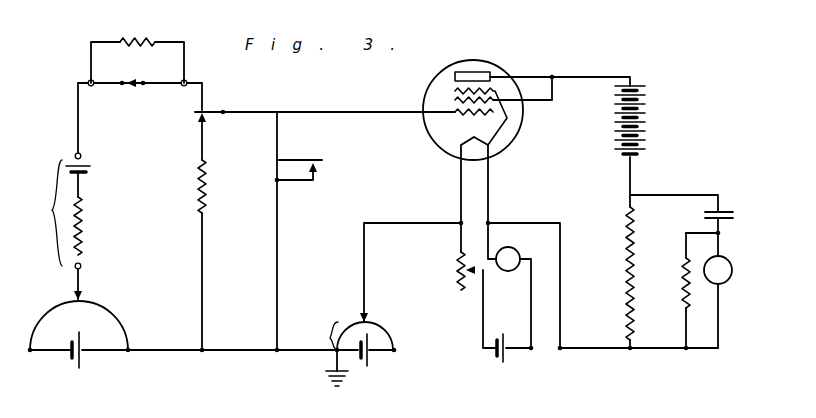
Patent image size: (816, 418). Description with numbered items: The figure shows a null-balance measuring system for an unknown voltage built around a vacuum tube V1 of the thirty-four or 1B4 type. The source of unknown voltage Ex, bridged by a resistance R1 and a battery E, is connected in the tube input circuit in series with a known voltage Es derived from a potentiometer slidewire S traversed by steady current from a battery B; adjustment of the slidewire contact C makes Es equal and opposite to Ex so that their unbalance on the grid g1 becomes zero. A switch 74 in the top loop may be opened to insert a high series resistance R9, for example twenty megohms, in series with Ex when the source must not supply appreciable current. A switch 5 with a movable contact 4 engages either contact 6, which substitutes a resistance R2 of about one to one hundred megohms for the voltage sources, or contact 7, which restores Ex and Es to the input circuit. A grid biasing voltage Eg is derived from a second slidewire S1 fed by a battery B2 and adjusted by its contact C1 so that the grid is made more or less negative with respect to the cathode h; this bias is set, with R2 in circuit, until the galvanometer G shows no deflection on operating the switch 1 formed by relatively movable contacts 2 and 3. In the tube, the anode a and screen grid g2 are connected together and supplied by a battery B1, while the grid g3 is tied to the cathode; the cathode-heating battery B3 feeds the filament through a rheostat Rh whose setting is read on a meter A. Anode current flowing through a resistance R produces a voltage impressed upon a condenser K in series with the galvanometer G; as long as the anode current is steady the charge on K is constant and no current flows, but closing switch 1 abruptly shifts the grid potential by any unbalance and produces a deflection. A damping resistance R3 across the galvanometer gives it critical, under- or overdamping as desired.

The series resistance R9 is at (126, 41).
The switch 74 is at (136, 87).
The contact 6 is at (198, 111).
The movable contact 4 is at (217, 108).
The switch 5 is at (227, 136).
The contact 7 is at (198, 128).
The contact 3 is at (302, 160).
The switch 1 is at (341, 176).
The contact 2 is at (305, 181).
The resistance R2 is at (208, 188).
The battery E / earth E is at (90, 166).
The unknown voltage Ex is at (35, 213).
The resistance R1 is at (86, 230).
The potentiometer slidewire S is at (50, 305).
The slidewire contact C is at (84, 298).
The known voltage Es is at (80, 302).
The battery B is at (80, 368).
The grid biasing voltage Eg is at (319, 326).
The contact C1 is at (370, 320).
The second slidewire potentiometer S1 is at (390, 334).
The battery B2 is at (370, 356).
The rheostat Rh is at (456, 270).
The meter A is at (508, 259).
The cathode-heating battery B3 is at (504, 362).
The tube V1 is at (518, 128).
The anode a is at (455, 77).
The grid g3 is at (455, 91).
The screen grid g2 is at (455, 100).
The grid g1 is at (474, 112).
The cathode h is at (456, 146).
The battery B1 is at (640, 120).
The condenser K is at (726, 210).
The galvanometer G is at (718, 270).
The resistance R is at (626, 258).
The damping resistance R3 is at (682, 290).